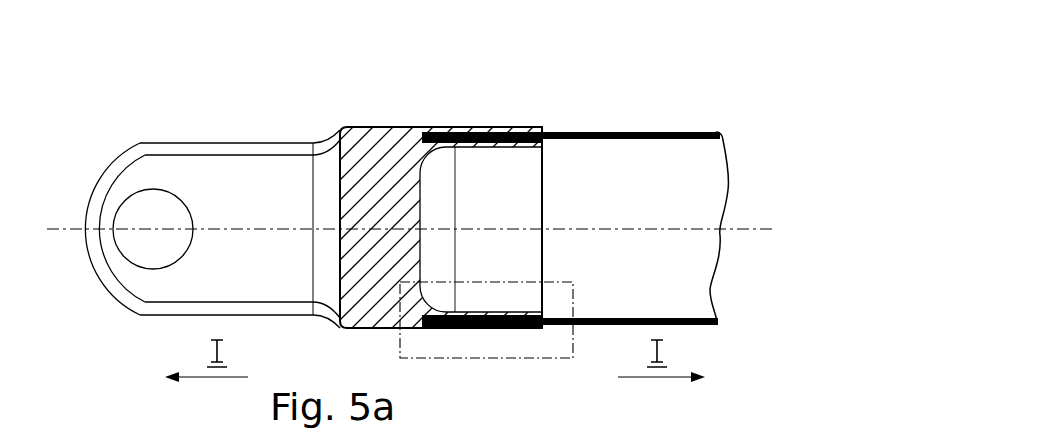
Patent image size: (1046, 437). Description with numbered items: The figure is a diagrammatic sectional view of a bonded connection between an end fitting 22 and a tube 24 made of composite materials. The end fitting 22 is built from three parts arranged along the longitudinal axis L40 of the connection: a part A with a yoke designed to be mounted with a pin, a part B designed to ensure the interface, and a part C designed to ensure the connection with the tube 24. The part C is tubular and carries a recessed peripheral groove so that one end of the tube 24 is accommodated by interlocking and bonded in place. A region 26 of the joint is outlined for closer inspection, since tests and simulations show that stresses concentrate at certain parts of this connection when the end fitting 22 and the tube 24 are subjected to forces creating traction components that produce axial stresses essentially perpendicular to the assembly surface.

The part with a yoke A is at (187, 140).
The end fitting 22 is at (335, 137).
The interface part B is at (360, 127).
The tube connection part C is at (485, 127).
The tube 24 is at (655, 133).
The longitudinal axis L40 is at (82, 232).
The detail region 26 is at (482, 358).